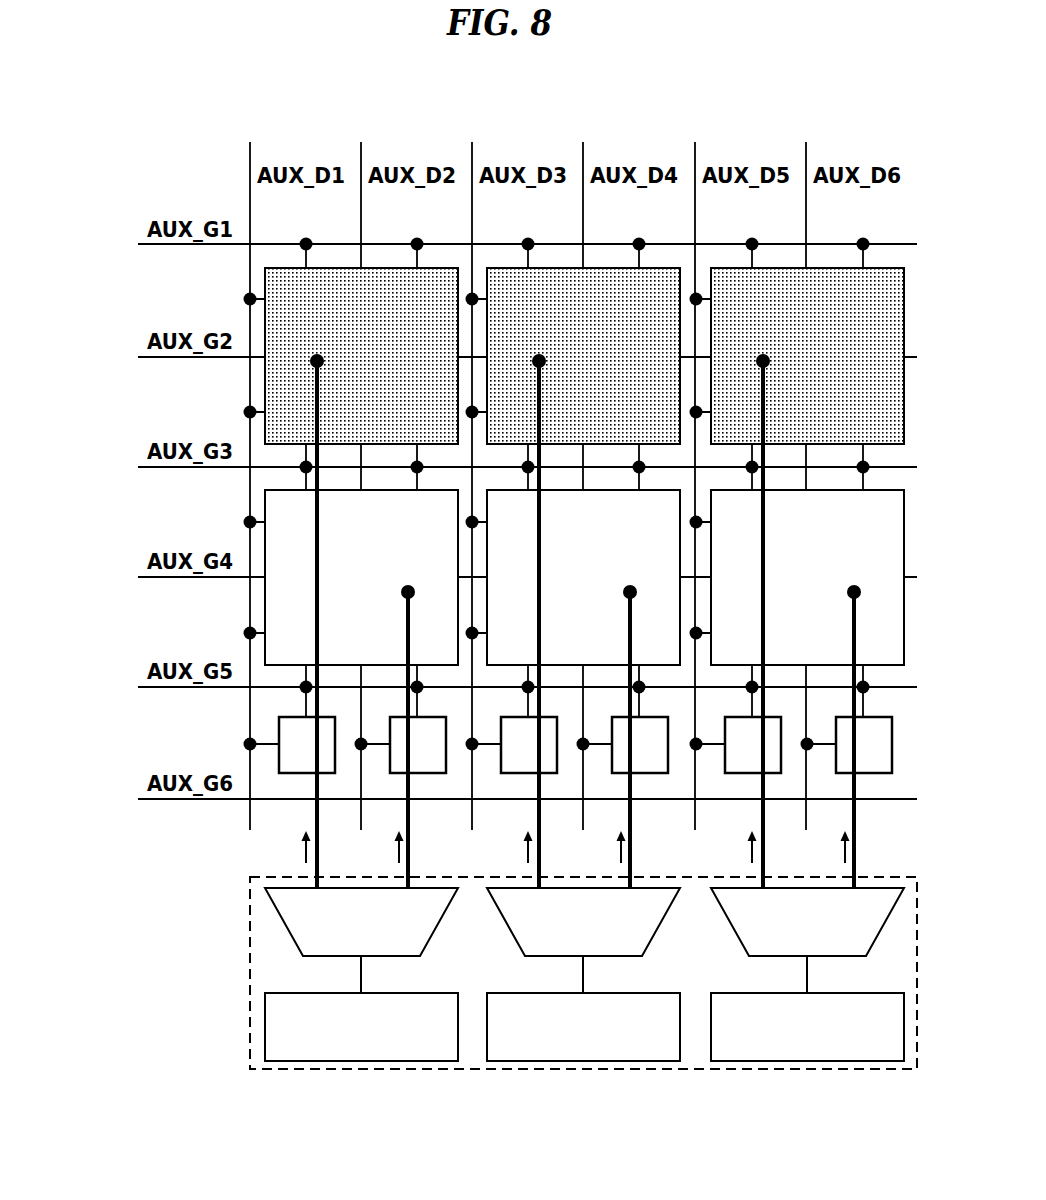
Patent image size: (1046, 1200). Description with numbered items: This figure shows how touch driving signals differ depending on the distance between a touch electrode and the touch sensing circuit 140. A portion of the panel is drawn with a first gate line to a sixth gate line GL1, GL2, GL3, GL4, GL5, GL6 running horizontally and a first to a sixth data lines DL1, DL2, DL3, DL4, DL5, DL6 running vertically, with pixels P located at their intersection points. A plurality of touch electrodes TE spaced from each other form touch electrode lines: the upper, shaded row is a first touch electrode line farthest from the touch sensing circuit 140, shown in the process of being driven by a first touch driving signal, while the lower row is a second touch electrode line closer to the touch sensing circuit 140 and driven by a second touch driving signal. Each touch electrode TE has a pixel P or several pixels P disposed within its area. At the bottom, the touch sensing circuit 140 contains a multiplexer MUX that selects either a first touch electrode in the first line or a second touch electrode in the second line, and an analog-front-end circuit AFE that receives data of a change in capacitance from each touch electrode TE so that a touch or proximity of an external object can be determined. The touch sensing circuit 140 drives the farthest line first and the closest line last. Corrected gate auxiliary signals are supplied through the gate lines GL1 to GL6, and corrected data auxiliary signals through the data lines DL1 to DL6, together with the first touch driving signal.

The touch sensing circuit 140 is at (539, 973).
The touch electrode TE is at (584, 466).
The pixel P is at (585, 745).
The multiplexer MUX is at (584, 940).
The analog-front-end circuit AFE is at (584, 1027).
The first data line DL1 is at (251, 470).
The second data line DL2 is at (362, 470).
The third data line DL3 is at (473, 470).
The fourth data line DL4 is at (584, 470).
The fifth data line DL5 is at (696, 470).
The sixth data line DL6 is at (807, 470).
The first gate line GL1 is at (499, 245).
The second gate line GL2 is at (499, 358).
The third gate line GL3 is at (499, 468).
The fourth gate line GL4 is at (499, 578).
The fifth gate line GL5 is at (499, 688).
The sixth gate line GL6 is at (499, 800).